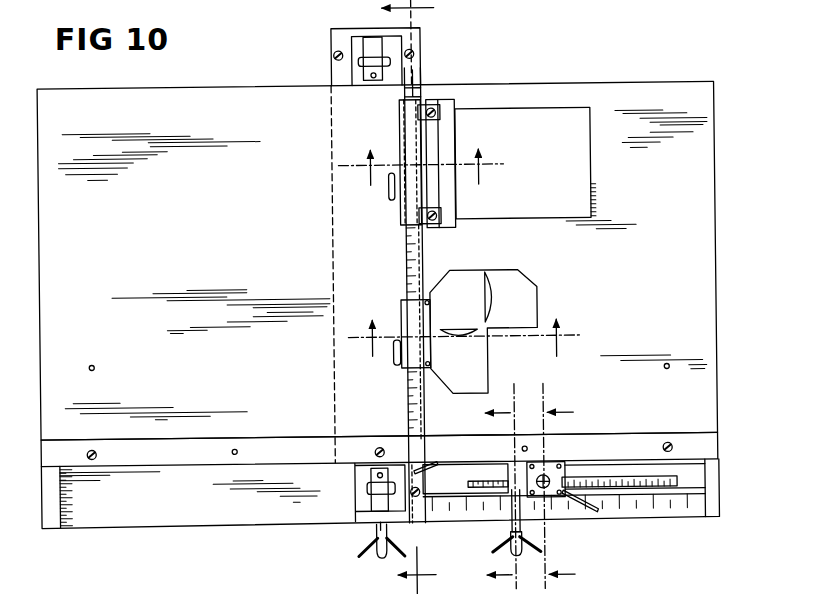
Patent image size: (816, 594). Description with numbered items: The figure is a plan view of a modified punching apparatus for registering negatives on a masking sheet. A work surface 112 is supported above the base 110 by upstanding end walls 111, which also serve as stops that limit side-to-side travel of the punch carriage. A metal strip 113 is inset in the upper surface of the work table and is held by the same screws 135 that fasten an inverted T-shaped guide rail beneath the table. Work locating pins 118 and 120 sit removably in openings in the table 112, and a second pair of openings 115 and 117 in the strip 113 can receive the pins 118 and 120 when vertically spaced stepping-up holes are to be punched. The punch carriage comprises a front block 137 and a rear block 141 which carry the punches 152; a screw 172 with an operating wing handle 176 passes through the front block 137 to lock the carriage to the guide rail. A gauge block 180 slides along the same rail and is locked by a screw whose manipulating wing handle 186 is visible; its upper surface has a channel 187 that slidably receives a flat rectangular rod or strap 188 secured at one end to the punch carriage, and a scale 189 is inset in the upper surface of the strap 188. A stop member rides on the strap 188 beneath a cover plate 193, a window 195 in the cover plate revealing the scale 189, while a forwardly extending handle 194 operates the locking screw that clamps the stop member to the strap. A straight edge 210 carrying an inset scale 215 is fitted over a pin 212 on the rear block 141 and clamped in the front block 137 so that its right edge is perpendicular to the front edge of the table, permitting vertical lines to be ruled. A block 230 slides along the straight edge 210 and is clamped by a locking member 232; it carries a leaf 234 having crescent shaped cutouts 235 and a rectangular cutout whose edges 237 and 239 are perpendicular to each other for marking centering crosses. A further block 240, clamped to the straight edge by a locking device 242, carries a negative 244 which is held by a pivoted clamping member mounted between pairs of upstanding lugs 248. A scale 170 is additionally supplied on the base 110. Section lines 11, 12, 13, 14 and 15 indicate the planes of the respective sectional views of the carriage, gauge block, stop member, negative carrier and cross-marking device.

The base 110 is at (108, 522).
The end walls 111 is at (50, 498).
The work surface 112 is at (216, 278).
The metal strip 113 is at (606, 446).
The opening 115 is at (235, 447).
The opening 117 is at (525, 447).
The work locating pin 118 is at (93, 362).
The work locating pin 120 is at (668, 366).
The screws 135 is at (89, 446).
The front block 137 is at (361, 524).
The rear block 141 is at (359, 31).
The punches 152 is at (386, 61).
The scale 170 is at (686, 512).
The screw 172 is at (411, 535).
The operating wing handle 176 is at (402, 549).
The gauge block 180 is at (530, 466).
The manipulating wing handle 186 is at (538, 551).
The channel 187 is at (500, 499).
The rod 188 is at (456, 470).
The scale 189 is at (612, 478).
The cover plate 193 is at (563, 468).
The handle 194 is at (590, 514).
The window 195 is at (541, 490).
The straight edge 210 is at (420, 257).
The pin 212 is at (418, 80).
The scale 215 is at (415, 273).
The block 230 is at (405, 308).
The locking member 232 is at (392, 360).
The leaf 234 is at (515, 280).
The crescent shaped cutouts 235 is at (494, 286).
The edges 237 is at (455, 330).
The edges 239 is at (483, 292).
The block 240 is at (410, 129).
The locking device 242 is at (389, 193).
The negative 244 is at (541, 112).
The upstanding lugs 248 is at (439, 107).
The section line 11- 11 is at (402, 297).
The section line 12- 12 is at (485, 487).
The section line 13- 13 is at (570, 486).
The section line 14- 14 is at (421, 153).
The section line 15- 15 is at (464, 325).